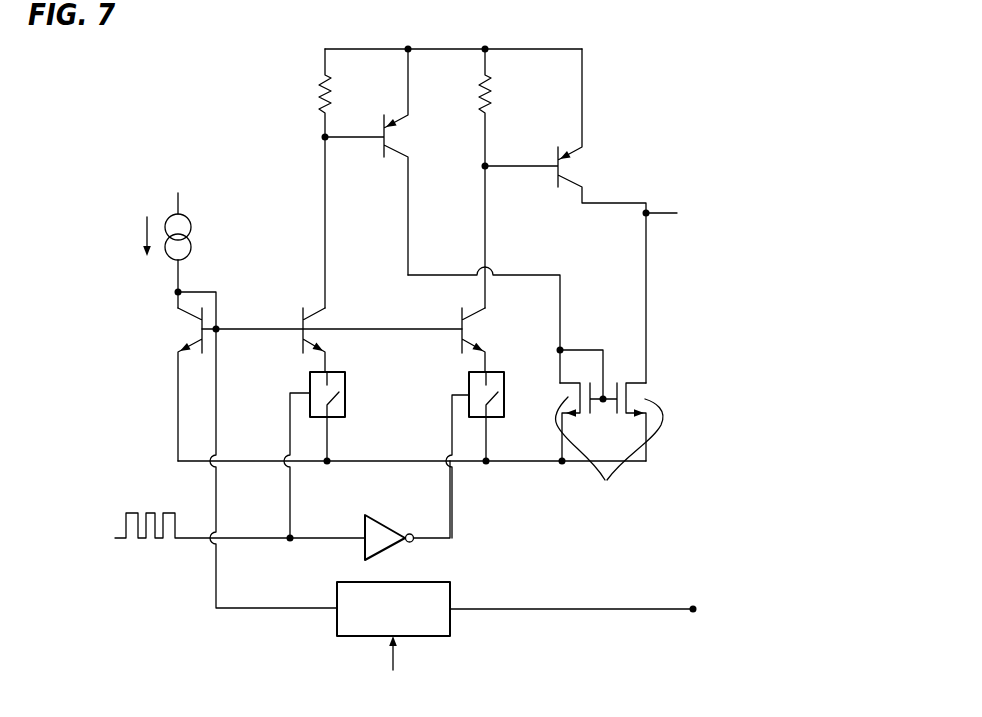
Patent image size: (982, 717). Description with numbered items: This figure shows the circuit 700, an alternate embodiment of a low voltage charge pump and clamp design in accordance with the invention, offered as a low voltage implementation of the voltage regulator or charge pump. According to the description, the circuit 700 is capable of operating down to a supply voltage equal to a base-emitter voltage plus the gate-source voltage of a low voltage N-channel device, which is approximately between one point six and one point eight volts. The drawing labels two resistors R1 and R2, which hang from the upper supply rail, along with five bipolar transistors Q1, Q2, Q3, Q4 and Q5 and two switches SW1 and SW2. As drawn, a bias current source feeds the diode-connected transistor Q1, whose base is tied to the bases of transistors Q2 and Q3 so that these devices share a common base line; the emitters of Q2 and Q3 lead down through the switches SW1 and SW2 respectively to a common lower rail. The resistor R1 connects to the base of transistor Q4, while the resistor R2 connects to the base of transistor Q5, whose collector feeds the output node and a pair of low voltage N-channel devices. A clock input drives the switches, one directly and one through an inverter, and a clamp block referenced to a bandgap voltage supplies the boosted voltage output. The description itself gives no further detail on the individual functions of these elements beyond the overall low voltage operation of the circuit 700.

The circuit 700 is at (217, 689).
The resistor R1 is at (307, 93).
The resistor R2 is at (468, 107).
The transistor Q1 is at (180, 384).
The transistor Q2 is at (332, 335).
The transistor Q3 is at (491, 333).
The transistor Q4 is at (379, 162).
The transistor Q5 is at (565, 216).
The switch SW1 is at (338, 455).
The switch SW2 is at (498, 455).